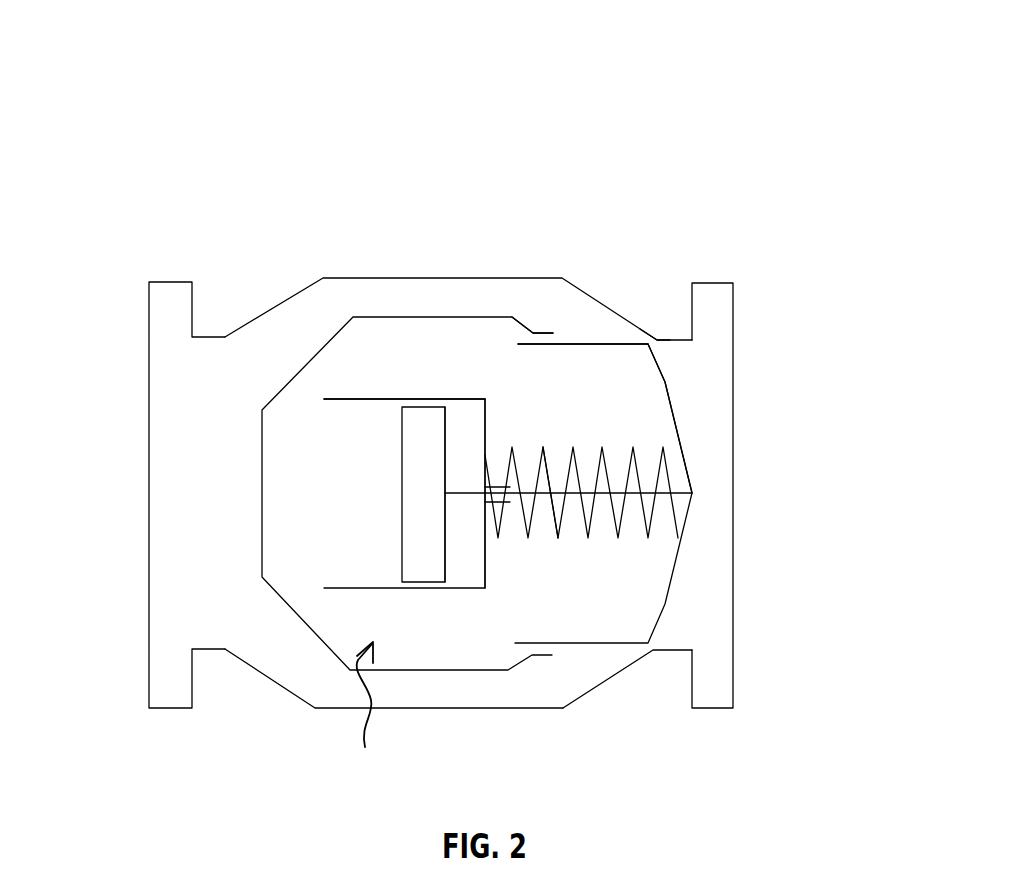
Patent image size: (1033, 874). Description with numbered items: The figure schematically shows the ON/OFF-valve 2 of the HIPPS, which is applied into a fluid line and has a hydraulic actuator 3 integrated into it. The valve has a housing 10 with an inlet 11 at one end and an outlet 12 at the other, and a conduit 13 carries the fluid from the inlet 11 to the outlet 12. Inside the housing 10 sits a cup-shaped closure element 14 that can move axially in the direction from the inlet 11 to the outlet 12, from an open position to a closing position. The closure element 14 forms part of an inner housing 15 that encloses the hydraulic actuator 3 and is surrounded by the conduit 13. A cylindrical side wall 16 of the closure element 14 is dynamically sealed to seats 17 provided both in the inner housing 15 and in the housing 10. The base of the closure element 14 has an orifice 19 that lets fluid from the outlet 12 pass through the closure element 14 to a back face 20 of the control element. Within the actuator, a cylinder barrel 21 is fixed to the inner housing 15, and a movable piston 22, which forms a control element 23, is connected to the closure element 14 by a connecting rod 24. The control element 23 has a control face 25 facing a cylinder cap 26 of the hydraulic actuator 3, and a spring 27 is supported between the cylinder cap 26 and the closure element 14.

The ON/OFF-valve 2 is at (668, 133).
The hydraulic actuator 3 is at (360, 719).
The housing 10 is at (285, 300).
The inlet 11 is at (148, 487).
The outlet 12 is at (732, 495).
The conduit 13 is at (288, 658).
The closure element 14 is at (666, 597).
The inner housing 15 is at (285, 382).
The cylindrical side wall 16 is at (610, 343).
The seats 17 is at (545, 333).
The orifice 19 is at (665, 383).
The back face 20 is at (402, 512).
The cylinder barrel 21 is at (465, 398).
The piston 22 is at (356, 494).
The control element 23 is at (425, 445).
The connecting rod 24 is at (600, 495).
The control face 25 is at (445, 542).
The cylinder cap 26 is at (483, 558).
The spring 27 is at (548, 475).